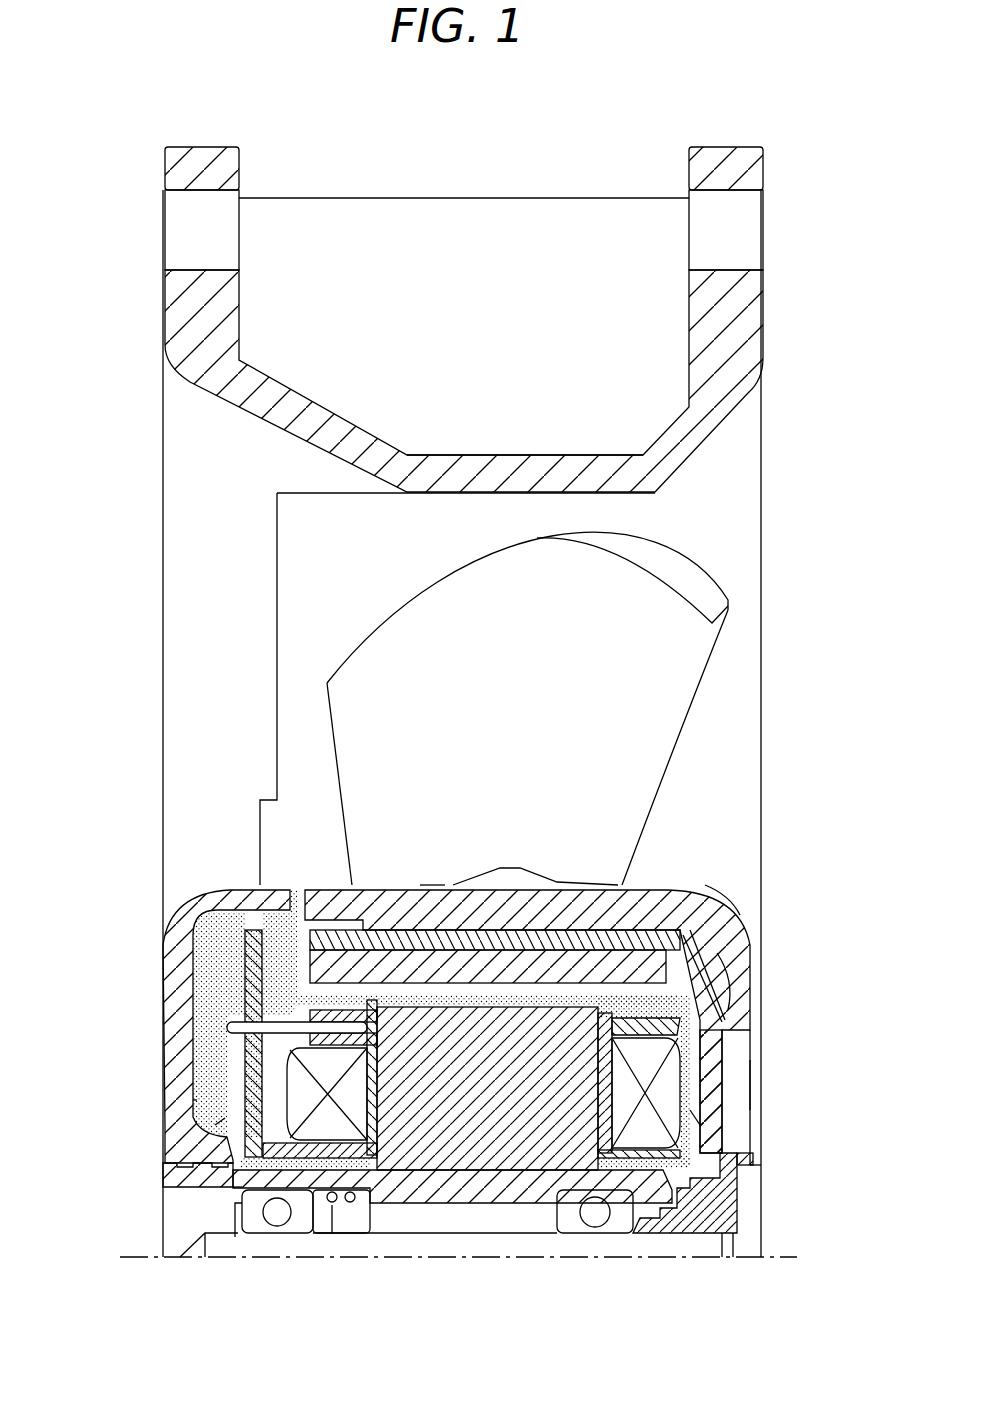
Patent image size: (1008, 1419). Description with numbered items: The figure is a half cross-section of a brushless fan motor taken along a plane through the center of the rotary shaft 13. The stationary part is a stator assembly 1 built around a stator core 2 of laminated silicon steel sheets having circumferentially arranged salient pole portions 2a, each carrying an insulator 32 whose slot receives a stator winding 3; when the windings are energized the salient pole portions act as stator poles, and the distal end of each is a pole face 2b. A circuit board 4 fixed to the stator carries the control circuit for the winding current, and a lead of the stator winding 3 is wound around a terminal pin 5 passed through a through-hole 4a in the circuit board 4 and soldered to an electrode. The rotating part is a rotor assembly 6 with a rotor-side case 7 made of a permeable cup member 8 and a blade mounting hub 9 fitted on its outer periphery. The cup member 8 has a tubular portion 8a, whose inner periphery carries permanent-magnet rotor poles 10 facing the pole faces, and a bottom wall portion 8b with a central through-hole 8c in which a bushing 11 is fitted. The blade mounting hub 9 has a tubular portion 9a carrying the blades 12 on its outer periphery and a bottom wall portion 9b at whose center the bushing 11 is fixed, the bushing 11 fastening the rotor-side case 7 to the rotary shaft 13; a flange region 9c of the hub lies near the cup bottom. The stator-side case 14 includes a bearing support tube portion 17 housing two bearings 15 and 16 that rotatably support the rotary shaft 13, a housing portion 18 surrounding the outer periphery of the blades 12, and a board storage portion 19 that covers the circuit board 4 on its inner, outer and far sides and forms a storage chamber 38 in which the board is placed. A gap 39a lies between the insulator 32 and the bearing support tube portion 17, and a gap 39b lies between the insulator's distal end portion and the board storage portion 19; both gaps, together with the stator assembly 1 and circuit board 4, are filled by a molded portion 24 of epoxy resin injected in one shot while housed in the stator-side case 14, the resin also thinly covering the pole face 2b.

The stator-side case 14 is at (158, 128).
The housing portion 18 is at (472, 470).
The blades 12 is at (540, 583).
The blade mounting hub 9 is at (738, 1032).
The tubular portion 9a is at (425, 888).
The bottom wall portion 9b is at (733, 1062).
The casing flange 9c is at (753, 1160).
The rotor assembly 6 is at (714, 908).
The cup member 8 is at (740, 940).
The tubular portion 8a is at (485, 938).
The bottom wall portion 8b is at (712, 1122).
The through-hole 8c is at (737, 1207).
The rotor poles 10 is at (555, 888).
The stator core 2 is at (485, 1145).
The salient pole portions 2a is at (652, 1030).
The pole face 2b is at (543, 968).
The stator winding 3 is at (302, 1095).
The storage chamber 38 is at (222, 955).
The circuit board 4 is at (252, 990).
The through-hole 4a is at (248, 1028).
The terminal pin 5 is at (300, 1046).
The board storage portion 19 is at (175, 1100).
The molded portion 24 is at (222, 1120).
The stator assembly 1 is at (205, 1135).
The gap 39b is at (226, 1165).
The bearing support tube portion 17 is at (225, 1184).
The bearing 15 is at (257, 1222).
The insulator 32 is at (290, 1185).
The gap 39a is at (335, 1180).
The bearing 16 is at (568, 1220).
The rotary shaft 13 is at (638, 1250).
The bushing 11 is at (700, 1213).
The rotor-side case 7 is at (752, 1083).